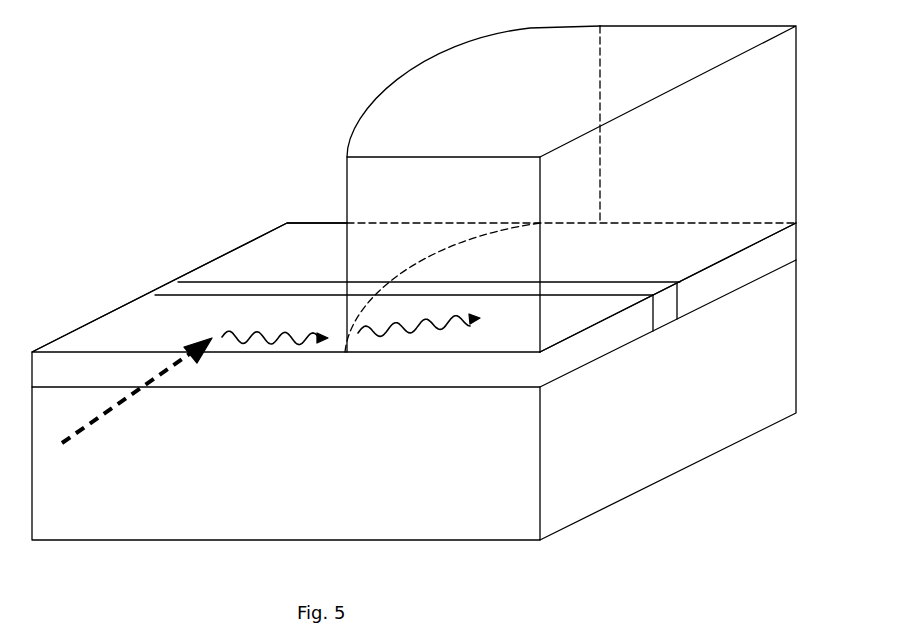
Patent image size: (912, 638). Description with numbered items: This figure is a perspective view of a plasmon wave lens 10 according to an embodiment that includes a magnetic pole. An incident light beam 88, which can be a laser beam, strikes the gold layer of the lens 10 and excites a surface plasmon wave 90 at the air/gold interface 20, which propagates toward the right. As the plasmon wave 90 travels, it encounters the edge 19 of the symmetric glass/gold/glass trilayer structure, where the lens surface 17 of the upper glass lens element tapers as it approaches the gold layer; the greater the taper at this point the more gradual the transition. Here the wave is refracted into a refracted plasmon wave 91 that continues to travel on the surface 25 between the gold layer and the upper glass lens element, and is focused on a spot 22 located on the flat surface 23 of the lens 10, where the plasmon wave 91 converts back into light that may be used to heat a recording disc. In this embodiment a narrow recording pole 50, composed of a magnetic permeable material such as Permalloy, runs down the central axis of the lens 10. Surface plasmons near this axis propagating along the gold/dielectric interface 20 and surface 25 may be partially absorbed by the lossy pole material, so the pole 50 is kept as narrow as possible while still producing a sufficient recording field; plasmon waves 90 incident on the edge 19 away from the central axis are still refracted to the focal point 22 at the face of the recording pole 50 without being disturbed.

The plasmon lens 10 is at (677, 493).
The lens surface 17 is at (370, 107).
The edge 19 is at (463, 243).
The air/gold interface 20 is at (215, 275).
The spot 22 is at (667, 283).
The flat surface 23 is at (762, 92).
The surface 25 is at (608, 260).
The recording pole 50 is at (667, 312).
The incident light beam 88 is at (118, 405).
The plasmon wave 90 is at (275, 347).
The refracted plasmon wave 91 is at (407, 337).